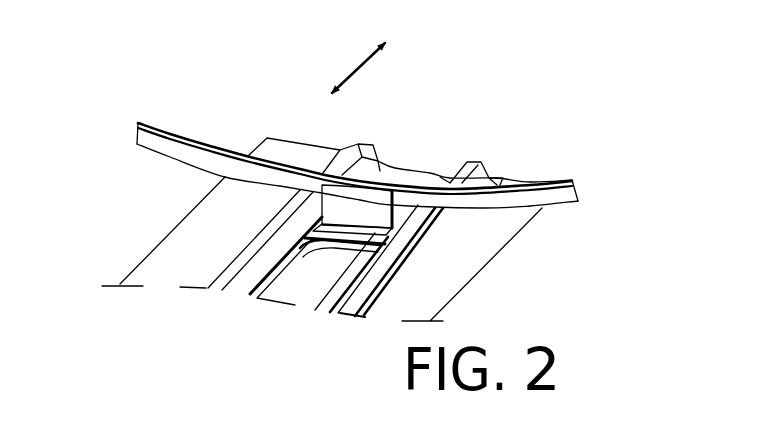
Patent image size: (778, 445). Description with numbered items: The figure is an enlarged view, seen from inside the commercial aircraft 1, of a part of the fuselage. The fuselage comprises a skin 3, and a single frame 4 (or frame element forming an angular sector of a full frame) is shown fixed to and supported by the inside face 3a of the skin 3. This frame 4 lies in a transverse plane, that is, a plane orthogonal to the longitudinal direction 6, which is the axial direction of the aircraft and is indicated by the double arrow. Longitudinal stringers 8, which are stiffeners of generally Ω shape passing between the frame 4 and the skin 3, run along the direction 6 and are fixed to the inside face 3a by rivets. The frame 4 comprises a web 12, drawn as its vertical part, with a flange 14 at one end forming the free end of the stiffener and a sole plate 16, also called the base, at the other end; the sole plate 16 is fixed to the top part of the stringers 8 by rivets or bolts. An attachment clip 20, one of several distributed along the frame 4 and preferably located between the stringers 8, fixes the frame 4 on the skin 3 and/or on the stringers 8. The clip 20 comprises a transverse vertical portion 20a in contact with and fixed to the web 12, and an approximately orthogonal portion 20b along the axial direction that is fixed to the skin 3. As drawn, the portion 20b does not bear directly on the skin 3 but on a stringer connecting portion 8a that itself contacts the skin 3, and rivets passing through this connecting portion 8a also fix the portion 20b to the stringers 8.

The commercial aircraft 1 is at (445, 128).
The skin 3 is at (157, 259).
The inside face of the skin 3a is at (195, 223).
The frame 4 is at (136, 124).
The longitudinal direction 6 is at (354, 66).
The stringer 8 is at (224, 291).
The stringer connecting portion 8a is at (335, 243).
The web 12 is at (574, 183).
The flange 14 is at (167, 132).
The sole plate 16 is at (580, 198).
The attachment clip 20 is at (360, 205).
The transverse vertical portion 20a is at (383, 214).
The orthogonal portion 20b is at (392, 240).